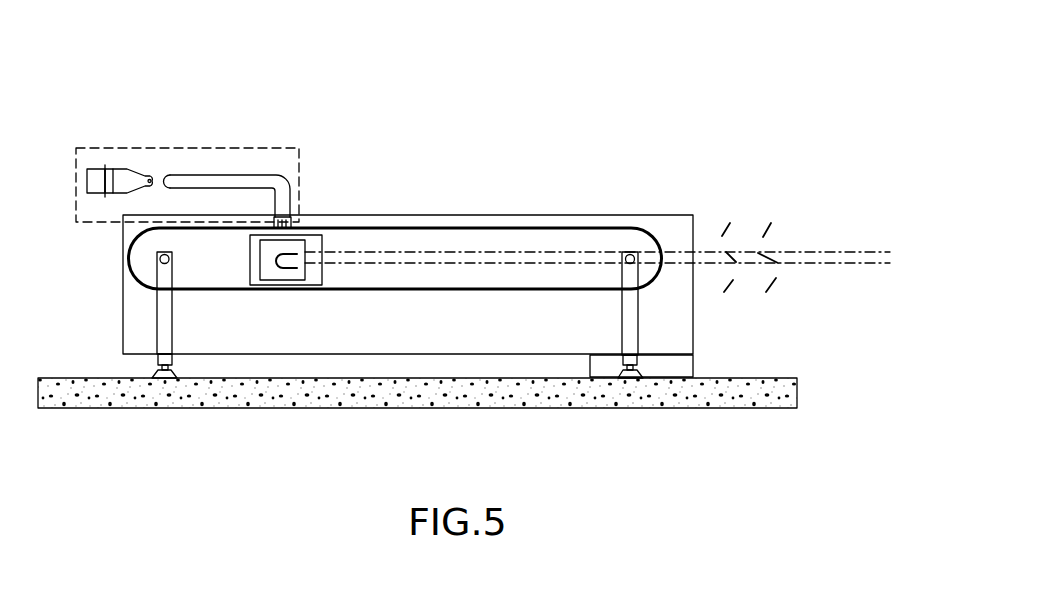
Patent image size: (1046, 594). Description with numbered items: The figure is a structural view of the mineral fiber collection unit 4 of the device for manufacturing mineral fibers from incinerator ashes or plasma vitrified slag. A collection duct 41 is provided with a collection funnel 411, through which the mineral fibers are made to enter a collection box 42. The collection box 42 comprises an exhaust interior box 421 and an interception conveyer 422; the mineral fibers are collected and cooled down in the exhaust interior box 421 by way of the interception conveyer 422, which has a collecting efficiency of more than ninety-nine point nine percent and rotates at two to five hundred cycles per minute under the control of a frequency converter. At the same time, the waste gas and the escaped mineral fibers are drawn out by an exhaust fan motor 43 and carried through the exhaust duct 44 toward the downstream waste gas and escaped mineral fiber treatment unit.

The mineral fiber collection unit 4 is at (473, 105).
The collection duct 41 is at (187, 147).
The collection funnel 411 is at (97, 170).
The collection box 42 is at (385, 215).
The exhaust interior box 421 is at (307, 230).
The interception conveyer 422 is at (520, 228).
The exhaust fan motor 43 is at (283, 285).
The exhaust duct 44 is at (827, 252).